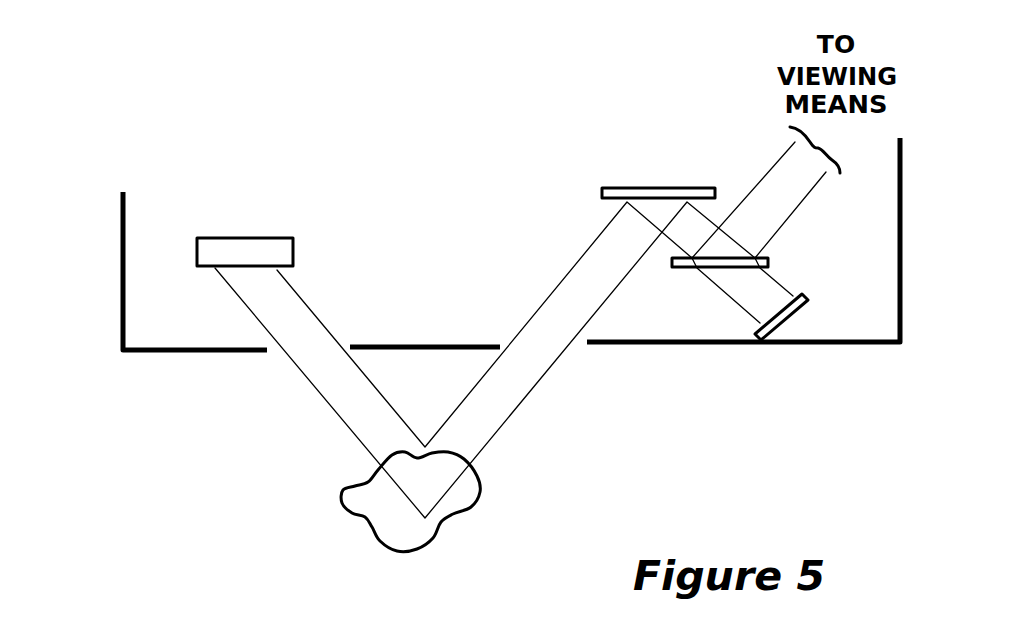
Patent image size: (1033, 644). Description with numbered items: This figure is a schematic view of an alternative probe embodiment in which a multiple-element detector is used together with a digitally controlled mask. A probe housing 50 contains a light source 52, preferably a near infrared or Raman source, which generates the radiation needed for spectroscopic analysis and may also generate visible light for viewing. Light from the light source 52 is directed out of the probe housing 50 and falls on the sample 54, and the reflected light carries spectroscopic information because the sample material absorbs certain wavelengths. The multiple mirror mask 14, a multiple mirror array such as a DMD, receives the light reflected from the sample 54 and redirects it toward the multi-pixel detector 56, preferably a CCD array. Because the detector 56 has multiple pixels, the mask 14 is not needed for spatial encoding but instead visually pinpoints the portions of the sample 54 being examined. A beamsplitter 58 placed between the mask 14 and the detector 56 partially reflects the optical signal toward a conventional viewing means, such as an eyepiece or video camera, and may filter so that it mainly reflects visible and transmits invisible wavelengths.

The probe housing 50 is at (123, 253).
The light source 52 is at (222, 238).
The multiple mirror mask 14 is at (658, 188).
The beamsplitter 58 is at (770, 262).
The multi-pixel detector 56 is at (788, 319).
The sample 54 is at (368, 522).